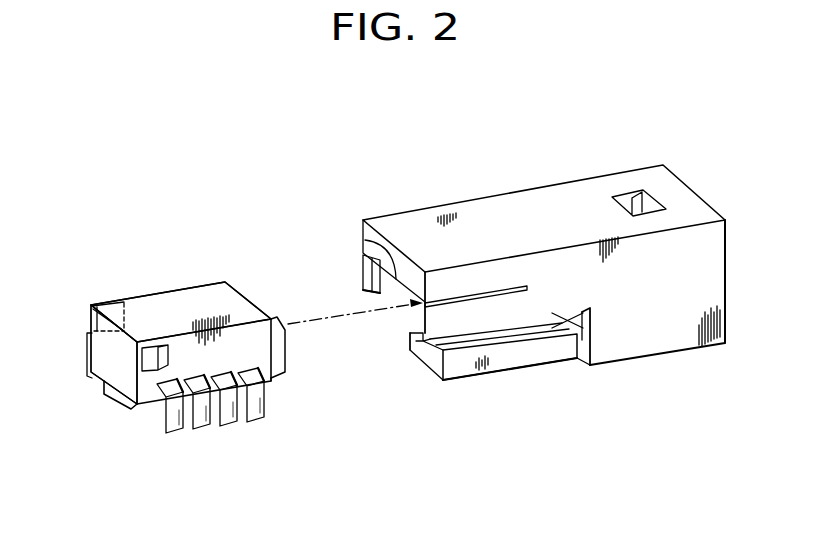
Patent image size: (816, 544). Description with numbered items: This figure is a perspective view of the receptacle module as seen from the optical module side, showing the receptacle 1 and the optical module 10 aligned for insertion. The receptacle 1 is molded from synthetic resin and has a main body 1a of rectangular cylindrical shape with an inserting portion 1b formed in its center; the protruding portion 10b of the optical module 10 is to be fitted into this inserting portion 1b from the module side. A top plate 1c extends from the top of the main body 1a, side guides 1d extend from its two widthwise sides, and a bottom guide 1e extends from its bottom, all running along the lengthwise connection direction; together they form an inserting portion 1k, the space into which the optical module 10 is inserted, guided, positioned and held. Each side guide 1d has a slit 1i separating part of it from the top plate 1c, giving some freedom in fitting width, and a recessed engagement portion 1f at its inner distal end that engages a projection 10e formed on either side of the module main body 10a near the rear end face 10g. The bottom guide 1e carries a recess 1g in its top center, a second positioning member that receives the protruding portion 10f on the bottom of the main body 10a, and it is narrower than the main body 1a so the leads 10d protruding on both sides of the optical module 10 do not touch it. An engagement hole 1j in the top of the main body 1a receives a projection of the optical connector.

The receptacle 1 is at (580, 179).
The main body 1a is at (677, 310).
The inserting portion 1b is at (572, 325).
The top plate 1c is at (453, 238).
The side guide 1d is at (365, 273).
The bottom guide 1e is at (460, 367).
The engagement portion 1f is at (362, 276).
The recess 1g is at (412, 350).
The slit 1i is at (506, 292).
The engagement hole 1j is at (632, 197).
The inserting portion 1k is at (410, 325).
The optical module 10 is at (153, 293).
The main body 10a is at (200, 303).
The protruding portion 10b is at (280, 381).
The leads 10d is at (87, 360).
The projection 10e is at (112, 303).
The protruding portion 10f is at (113, 397).
The rear end face 10g is at (115, 365).